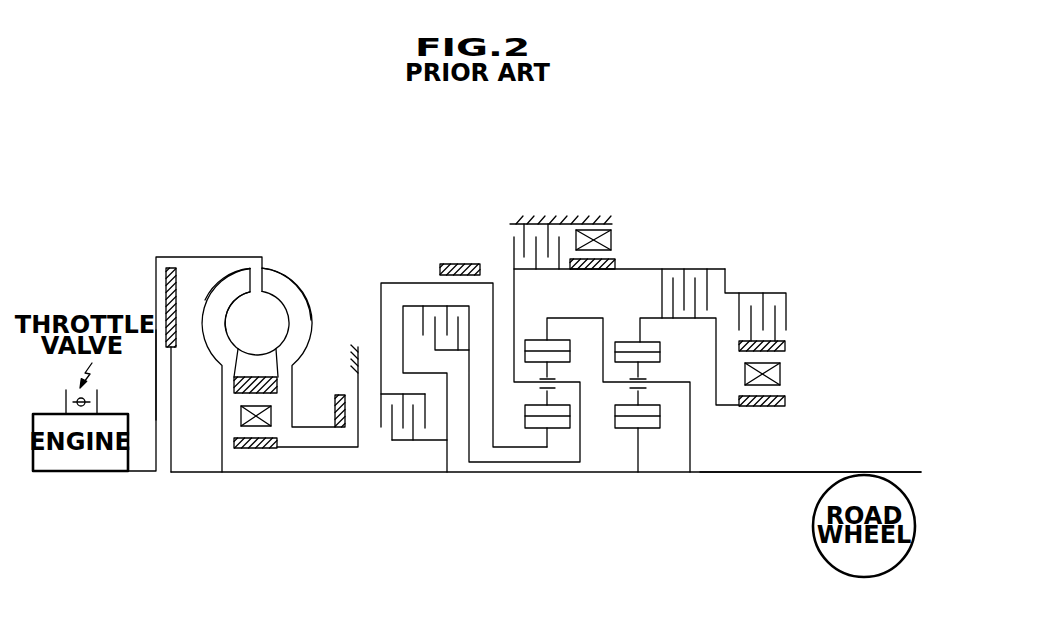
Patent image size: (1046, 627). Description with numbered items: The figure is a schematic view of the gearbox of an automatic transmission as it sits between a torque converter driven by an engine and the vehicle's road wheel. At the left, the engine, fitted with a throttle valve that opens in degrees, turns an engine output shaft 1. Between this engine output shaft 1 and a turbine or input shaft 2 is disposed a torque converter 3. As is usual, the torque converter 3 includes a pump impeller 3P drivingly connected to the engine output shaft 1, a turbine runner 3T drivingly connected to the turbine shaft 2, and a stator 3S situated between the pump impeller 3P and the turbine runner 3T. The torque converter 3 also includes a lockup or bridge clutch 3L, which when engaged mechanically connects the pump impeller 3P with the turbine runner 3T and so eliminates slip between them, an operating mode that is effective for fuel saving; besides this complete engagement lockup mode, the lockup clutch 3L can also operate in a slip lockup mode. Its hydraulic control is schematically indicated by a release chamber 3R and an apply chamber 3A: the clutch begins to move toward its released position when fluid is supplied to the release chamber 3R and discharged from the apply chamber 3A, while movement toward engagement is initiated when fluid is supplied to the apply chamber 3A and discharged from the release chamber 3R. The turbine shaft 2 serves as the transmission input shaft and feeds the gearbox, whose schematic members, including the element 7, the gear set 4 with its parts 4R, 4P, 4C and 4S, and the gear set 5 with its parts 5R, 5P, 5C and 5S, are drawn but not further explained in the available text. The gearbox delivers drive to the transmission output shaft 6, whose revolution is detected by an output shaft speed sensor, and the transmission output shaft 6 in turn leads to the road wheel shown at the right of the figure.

The engine output shaft 1 is at (142, 475).
The turbine shaft 2 is at (546, 504).
The torque converter 3 is at (212, 250).
The turbine runner 3T is at (213, 288).
The apply chamber 3A is at (263, 318).
The pump impeller 3P is at (300, 302).
The stator 3S is at (267, 368).
The lockup clutch 3L is at (166, 308).
The release chamber 3R is at (160, 372).
The one-way clutch 7 is at (230, 420).
The first planetary gear set 4 is at (590, 406).
The first ring gear 4R is at (533, 348).
The first pinion 4P is at (568, 357).
The first carrier 4C is at (575, 382).
The first sun gear 4S is at (533, 430).
The second planetary gear set 5 is at (671, 424).
The second ring gear 5R is at (645, 343).
The second pinion 5P is at (660, 412).
The second carrier 5C is at (665, 382).
The second sun gear 5S is at (625, 422).
The transmission output shaft 6 is at (756, 477).